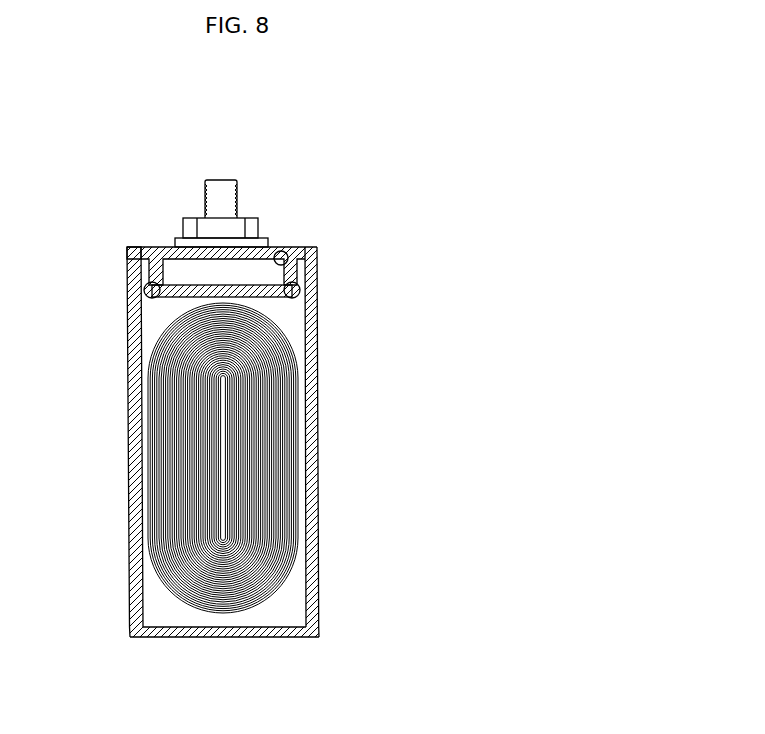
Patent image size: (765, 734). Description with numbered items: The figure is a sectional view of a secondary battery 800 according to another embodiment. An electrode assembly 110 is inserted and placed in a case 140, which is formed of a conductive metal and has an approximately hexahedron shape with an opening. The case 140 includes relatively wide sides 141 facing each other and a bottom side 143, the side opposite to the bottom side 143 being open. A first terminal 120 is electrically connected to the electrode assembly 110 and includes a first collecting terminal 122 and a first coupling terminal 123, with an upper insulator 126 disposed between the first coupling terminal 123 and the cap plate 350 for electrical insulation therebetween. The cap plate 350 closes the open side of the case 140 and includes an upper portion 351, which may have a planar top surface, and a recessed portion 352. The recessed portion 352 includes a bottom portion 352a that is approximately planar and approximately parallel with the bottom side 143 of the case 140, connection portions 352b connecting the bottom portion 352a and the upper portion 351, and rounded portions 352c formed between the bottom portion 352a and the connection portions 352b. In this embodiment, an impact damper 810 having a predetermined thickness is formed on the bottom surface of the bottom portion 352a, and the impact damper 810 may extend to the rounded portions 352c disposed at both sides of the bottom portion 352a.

The secondary battery 800 is at (333, 150).
The electrode assembly 110 is at (202, 618).
The first terminal 120 is at (199, 181).
The first collecting terminal 122 is at (227, 178).
The first coupling terminal 123 is at (188, 221).
The upper insulator 126 is at (178, 245).
The case 140 is at (233, 469).
The wide sides 141 is at (132, 403).
The bottom side 143 is at (253, 638).
The cap plate 350 is at (320, 252).
The upper portion 351 is at (135, 243).
The recessed portion 352 is at (242, 254).
The bottom portion 352a is at (243, 283).
The connection portions 352b is at (277, 250).
The rounded portions 352c is at (270, 297).
The impact damper 810 is at (283, 299).